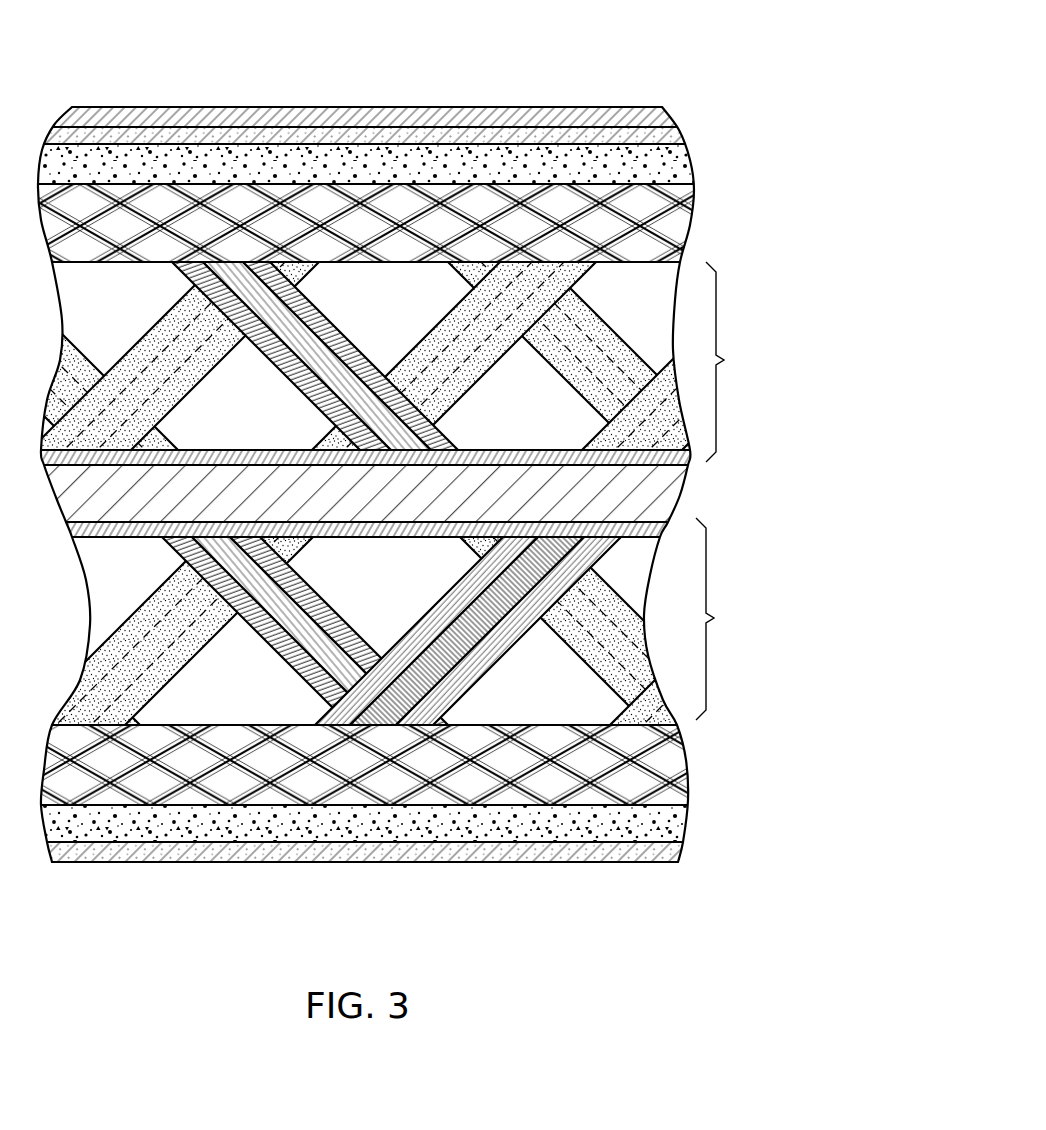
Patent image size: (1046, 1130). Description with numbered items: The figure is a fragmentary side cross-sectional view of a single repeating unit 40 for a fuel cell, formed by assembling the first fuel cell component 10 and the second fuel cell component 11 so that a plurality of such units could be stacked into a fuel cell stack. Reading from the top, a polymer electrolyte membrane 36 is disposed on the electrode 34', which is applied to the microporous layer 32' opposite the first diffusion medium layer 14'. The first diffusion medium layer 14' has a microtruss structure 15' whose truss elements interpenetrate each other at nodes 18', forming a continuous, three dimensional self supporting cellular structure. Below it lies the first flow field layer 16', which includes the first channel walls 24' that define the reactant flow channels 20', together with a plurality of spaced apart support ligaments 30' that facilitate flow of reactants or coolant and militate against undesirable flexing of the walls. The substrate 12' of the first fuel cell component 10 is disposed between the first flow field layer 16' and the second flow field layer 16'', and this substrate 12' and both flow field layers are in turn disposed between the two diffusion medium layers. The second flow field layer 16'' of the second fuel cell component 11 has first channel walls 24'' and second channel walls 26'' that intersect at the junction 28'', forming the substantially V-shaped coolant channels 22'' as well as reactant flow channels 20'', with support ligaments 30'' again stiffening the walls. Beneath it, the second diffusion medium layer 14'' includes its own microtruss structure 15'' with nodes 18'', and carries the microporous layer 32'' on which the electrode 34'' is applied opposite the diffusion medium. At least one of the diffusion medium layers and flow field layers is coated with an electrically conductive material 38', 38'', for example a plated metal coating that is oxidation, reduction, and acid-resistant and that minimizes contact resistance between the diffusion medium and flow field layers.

The repeating unit 40 is at (630, 80).
The polymer electrolyte membrane 36 is at (665, 120).
The electrode 34' is at (400, 135).
The microporous layer 32' is at (400, 165).
The first diffusion medium layer 14' is at (400, 225).
The microtruss structure 15' is at (89, 256).
The nodes 18' is at (417, 265).
The first fuel cell component 10 is at (698, 252).
The first flow field layer 16' is at (730, 362).
The reactant flow channels 20' is at (302, 360).
The first channel walls 24' is at (354, 360).
The support ligaments 30' is at (441, 360).
The electrically conductive material 38' is at (473, 339).
The substrate 12' is at (400, 495).
The second fuel cell component 11 is at (715, 518).
The second flow field layer 16'' is at (721, 619).
The coolant channels 22'' is at (183, 559).
The electrically conductive material 38'' is at (431, 659).
The first channel walls 24'' is at (338, 630).
The second channel walls 26'' is at (469, 630).
The junction 28'' is at (384, 619).
The support ligaments 30'' is at (455, 630).
The nodes 18'' is at (280, 734).
The microtruss structure 15'' is at (564, 710).
The reactant flow channels 20'' is at (289, 721).
The second diffusion medium layer 14'' is at (400, 765).
The microporous layer 32'' is at (400, 825).
The electrode 34'' is at (400, 852).